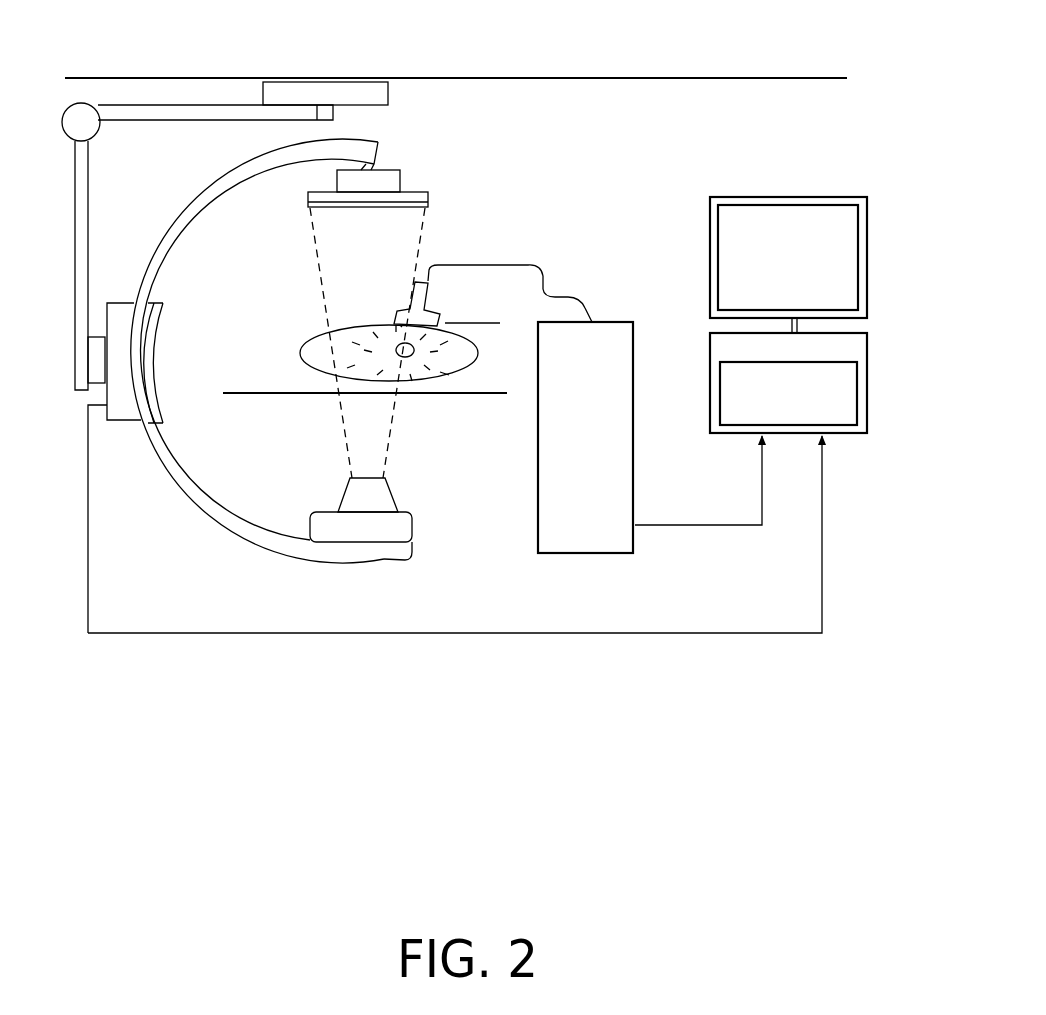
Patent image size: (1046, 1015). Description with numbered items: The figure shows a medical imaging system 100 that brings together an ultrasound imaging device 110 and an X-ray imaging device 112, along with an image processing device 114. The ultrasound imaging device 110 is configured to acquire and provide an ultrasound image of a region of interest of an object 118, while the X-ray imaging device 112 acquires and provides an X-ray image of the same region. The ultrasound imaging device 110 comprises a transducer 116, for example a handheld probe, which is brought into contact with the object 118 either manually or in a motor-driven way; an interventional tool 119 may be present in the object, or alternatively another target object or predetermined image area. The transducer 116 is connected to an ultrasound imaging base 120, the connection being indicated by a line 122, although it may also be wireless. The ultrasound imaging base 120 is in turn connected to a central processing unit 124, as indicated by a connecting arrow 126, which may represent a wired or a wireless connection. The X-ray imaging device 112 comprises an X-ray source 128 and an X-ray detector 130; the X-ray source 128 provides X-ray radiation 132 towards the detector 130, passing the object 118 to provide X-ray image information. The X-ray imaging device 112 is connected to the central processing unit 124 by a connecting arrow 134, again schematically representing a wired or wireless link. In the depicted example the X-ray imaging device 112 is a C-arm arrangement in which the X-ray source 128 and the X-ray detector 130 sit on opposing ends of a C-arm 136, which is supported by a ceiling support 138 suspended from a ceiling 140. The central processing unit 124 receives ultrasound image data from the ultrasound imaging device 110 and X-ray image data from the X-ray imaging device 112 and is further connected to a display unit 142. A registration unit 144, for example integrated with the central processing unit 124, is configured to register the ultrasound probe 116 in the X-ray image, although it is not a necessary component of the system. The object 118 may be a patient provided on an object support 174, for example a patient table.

The medical imaging system 100 is at (552, 155).
The ultrasound imaging device 110 is at (537, 246).
The X-ray imaging device 112 is at (392, 124).
The image processing device 114 is at (745, 155).
The transducer 116 is at (427, 292).
The object 118 is at (317, 333).
The interventional tool 119 is at (405, 357).
The ultrasound imaging base 120 is at (633, 400).
The line 122 is at (572, 295).
The central processing unit 124 is at (868, 333).
The connecting arrow 126 is at (648, 523).
The X-ray source 128 is at (392, 495).
The X-ray detector 130 is at (413, 187).
The X-ray radiation 132 is at (348, 407).
The connecting arrow 134 is at (823, 515).
The C-arm 136 is at (232, 175).
The ceiling support 138 is at (173, 105).
The ceiling 140 is at (500, 78).
The display unit 142 is at (840, 196).
The registration unit 144 is at (857, 398).
The object support 174 is at (478, 393).